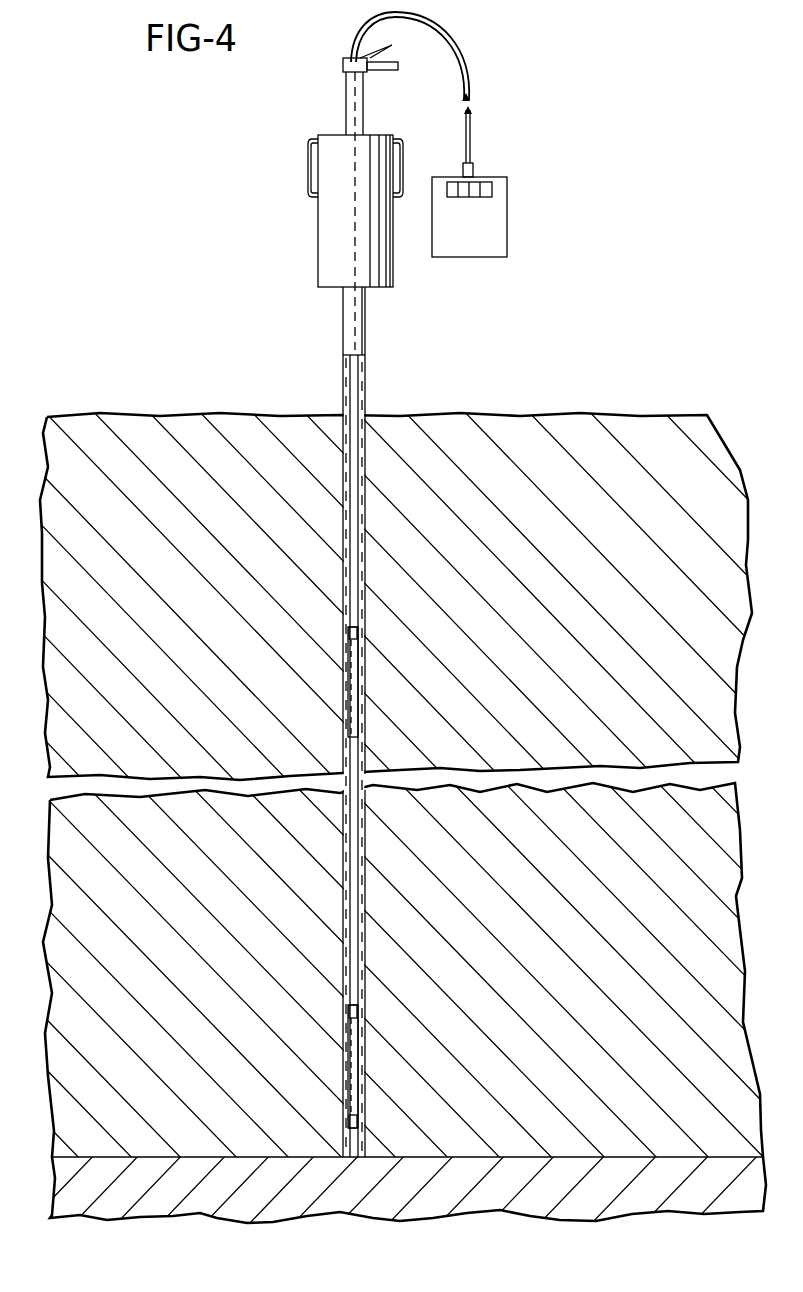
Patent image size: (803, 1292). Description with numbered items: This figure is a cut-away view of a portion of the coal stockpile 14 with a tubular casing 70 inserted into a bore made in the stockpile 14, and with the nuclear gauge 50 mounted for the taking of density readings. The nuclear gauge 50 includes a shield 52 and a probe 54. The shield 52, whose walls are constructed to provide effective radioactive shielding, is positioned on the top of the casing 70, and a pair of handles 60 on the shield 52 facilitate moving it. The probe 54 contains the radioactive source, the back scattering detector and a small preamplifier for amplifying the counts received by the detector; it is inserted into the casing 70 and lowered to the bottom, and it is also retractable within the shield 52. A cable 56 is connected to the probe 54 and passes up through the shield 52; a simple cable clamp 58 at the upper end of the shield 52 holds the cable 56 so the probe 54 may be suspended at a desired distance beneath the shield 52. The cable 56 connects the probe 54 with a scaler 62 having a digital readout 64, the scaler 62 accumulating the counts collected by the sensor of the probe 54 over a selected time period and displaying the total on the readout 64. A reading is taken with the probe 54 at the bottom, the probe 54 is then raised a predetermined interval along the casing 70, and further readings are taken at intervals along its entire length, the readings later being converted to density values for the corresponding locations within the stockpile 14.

The coal stockpile 14 is at (578, 424).
The nuclear gauge 50 is at (343, 200).
The shield 52 is at (327, 236).
The probe 54 is at (365, 675).
The cable 56 is at (448, 30).
The cable clamp 58 is at (343, 62).
The handles 60 is at (308, 166).
The scaler 62 is at (497, 209).
The digital readout 64 is at (483, 187).
The casing 70 is at (367, 320).